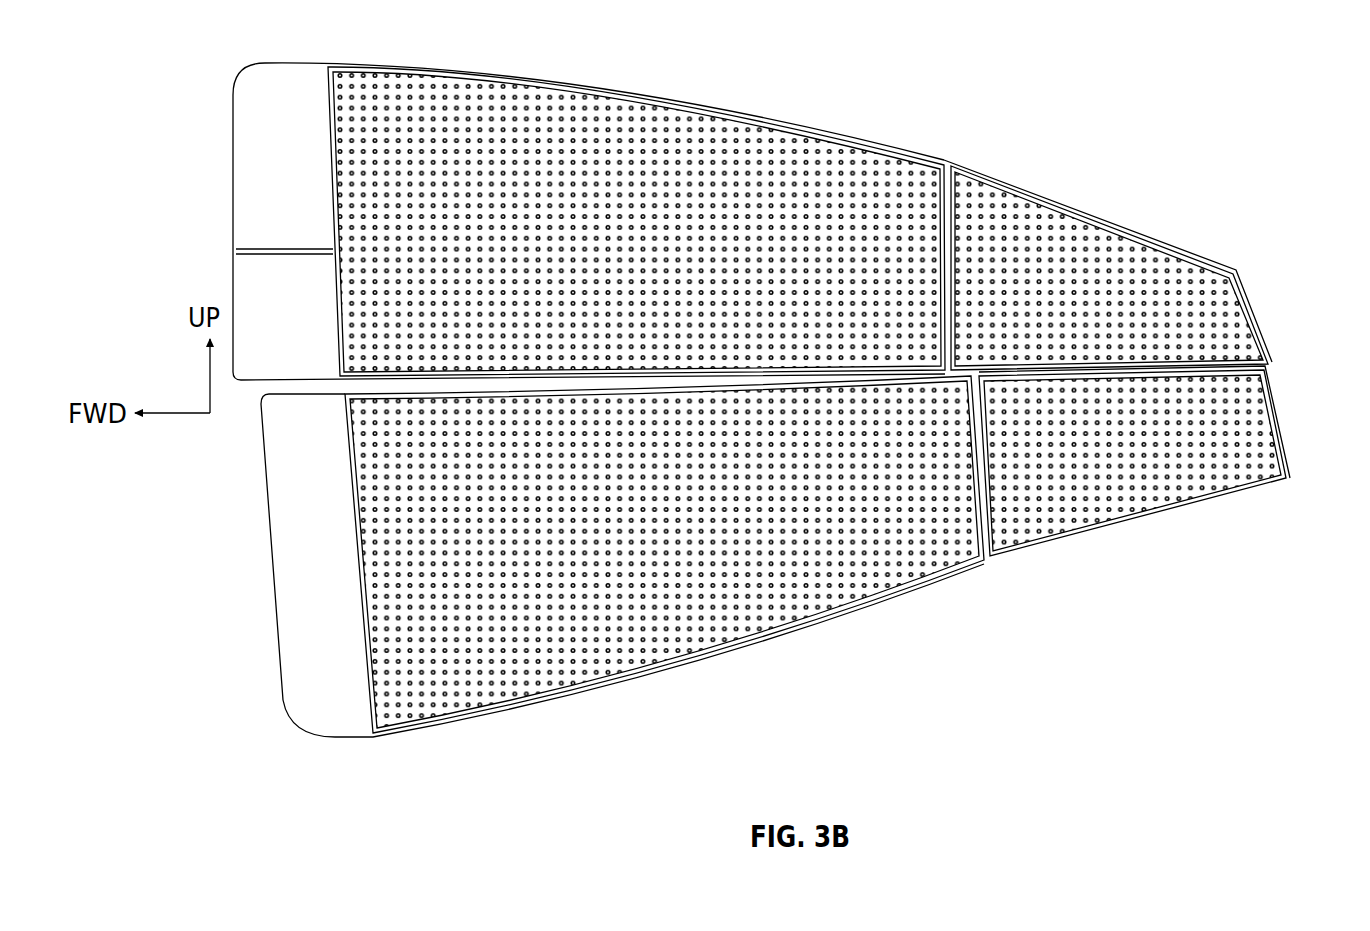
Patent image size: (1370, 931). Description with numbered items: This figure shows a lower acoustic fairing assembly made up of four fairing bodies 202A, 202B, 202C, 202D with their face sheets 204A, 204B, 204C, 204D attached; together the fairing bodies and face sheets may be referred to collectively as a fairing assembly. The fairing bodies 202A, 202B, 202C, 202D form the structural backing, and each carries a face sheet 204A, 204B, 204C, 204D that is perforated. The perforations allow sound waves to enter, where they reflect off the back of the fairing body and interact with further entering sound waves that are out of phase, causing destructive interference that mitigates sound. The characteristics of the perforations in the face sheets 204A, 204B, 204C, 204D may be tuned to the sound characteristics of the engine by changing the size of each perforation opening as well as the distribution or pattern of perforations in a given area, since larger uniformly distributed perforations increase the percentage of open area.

The fairing body 202A is at (255, 137).
The fairing body 202B is at (293, 563).
The fairing body 202C is at (1240, 316).
The fairing body 202D is at (1267, 425).
The face sheet 204A is at (482, 101).
The face sheet 204B is at (485, 687).
The face sheet 204C is at (1098, 237).
The face sheet 204D is at (1199, 480).